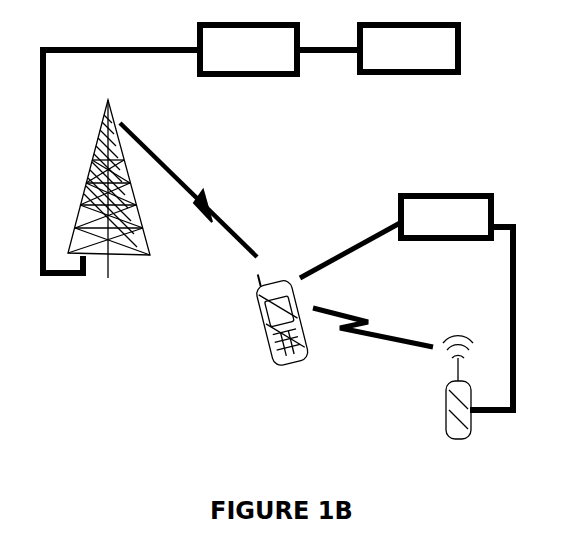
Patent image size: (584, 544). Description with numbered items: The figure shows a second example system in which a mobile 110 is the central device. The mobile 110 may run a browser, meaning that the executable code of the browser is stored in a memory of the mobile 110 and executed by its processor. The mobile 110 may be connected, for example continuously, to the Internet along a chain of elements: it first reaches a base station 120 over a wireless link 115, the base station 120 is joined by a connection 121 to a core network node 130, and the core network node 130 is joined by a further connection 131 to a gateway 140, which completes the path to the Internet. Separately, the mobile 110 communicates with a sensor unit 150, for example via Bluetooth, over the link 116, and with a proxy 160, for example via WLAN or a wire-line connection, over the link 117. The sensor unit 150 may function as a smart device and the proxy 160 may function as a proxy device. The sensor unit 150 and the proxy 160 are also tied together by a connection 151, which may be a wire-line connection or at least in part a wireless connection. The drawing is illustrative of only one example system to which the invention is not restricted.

The mobile 110 is at (281, 327).
The wireless link 115 is at (188, 190).
The wireless link to access point 116 is at (373, 327).
The connection to network node 117 is at (350, 250).
The base station 120 is at (109, 190).
The connection 121 is at (104, 161).
The core network node 130 is at (248, 49).
The connection 131 is at (328, 40).
The gateway 140 is at (409, 48).
The sensor unit 150 is at (458, 403).
The connection 151 is at (509, 318).
The proxy 160 is at (446, 217).